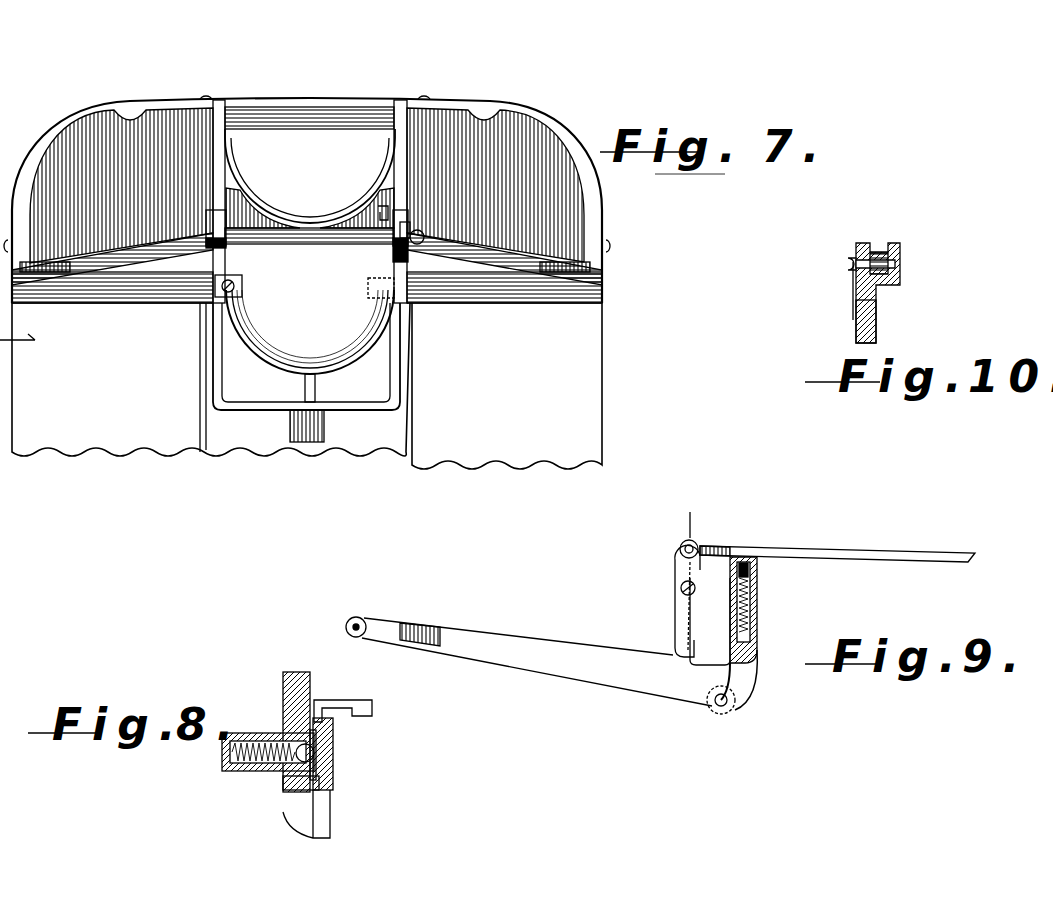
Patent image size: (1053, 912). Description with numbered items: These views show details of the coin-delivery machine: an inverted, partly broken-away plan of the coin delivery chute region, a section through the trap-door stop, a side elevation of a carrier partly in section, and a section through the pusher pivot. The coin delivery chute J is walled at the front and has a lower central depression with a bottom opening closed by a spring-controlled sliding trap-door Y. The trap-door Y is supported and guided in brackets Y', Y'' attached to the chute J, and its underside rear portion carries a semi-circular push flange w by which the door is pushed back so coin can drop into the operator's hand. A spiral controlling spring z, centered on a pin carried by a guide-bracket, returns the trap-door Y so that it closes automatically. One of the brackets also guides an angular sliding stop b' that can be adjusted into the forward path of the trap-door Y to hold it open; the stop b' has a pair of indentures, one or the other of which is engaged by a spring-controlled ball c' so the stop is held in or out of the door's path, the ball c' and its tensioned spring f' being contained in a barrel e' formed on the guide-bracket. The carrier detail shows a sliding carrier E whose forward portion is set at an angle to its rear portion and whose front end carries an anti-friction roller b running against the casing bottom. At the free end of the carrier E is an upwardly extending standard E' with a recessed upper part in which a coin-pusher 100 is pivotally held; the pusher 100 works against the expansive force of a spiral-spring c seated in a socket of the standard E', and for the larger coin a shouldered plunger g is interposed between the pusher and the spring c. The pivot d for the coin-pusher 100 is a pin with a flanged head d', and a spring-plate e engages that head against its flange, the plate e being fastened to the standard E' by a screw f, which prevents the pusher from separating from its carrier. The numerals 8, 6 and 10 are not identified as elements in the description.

In FIG. 7, the coin delivery chute J is at (85, 132).
In FIG. 7, the trap-door Y is at (306, 369).
In FIG. 7, the bracket Y' is at (379, 252).
In FIG. 8, the bracket Y' is at (338, 755).
In FIG. 7, the bracket Y'' is at (241, 258).
In FIG. 7, the push flange w is at (262, 362).
In FIG. 7, the controlling spring z is at (326, 424).
In FIG. 7, the cross bar 8 is at (309, 236).
In FIG. 7, the barrel e' is at (380, 204).
In FIG. 8, the barrel e' is at (268, 727).
In FIG. 7, the sliding stop b' is at (423, 217).
In FIG. 8, the sliding stop b' is at (343, 695).
In FIG. 7, the ball 6 is at (432, 237).
In FIG. 10, the pivot d is at (897, 293).
In FIG. 10, the flanged head d' is at (853, 259).
In FIG. 9, the flanged head d' is at (675, 544).
In FIG. 10, the spring-plate e is at (834, 291).
In FIG. 10, the screw f is at (846, 323).
In FIG. 9, the screw f is at (666, 582).
In FIG. 9, the sliding carrier E is at (529, 661).
In FIG. 9, the standard E' is at (673, 601).
In FIG. 9, the shouldered plunger g is at (752, 572).
In FIG. 9, the spiral-spring c is at (755, 633).
In FIG. 9, the anti-friction roller b is at (736, 700).
In FIG. 9, the coin-pusher 100 is at (842, 552).
In FIG. 9, the section line 10 is at (705, 512).
In FIG. 8, the spring-controlled ball c' is at (333, 762).
In FIG. 8, the spring f' is at (278, 781).